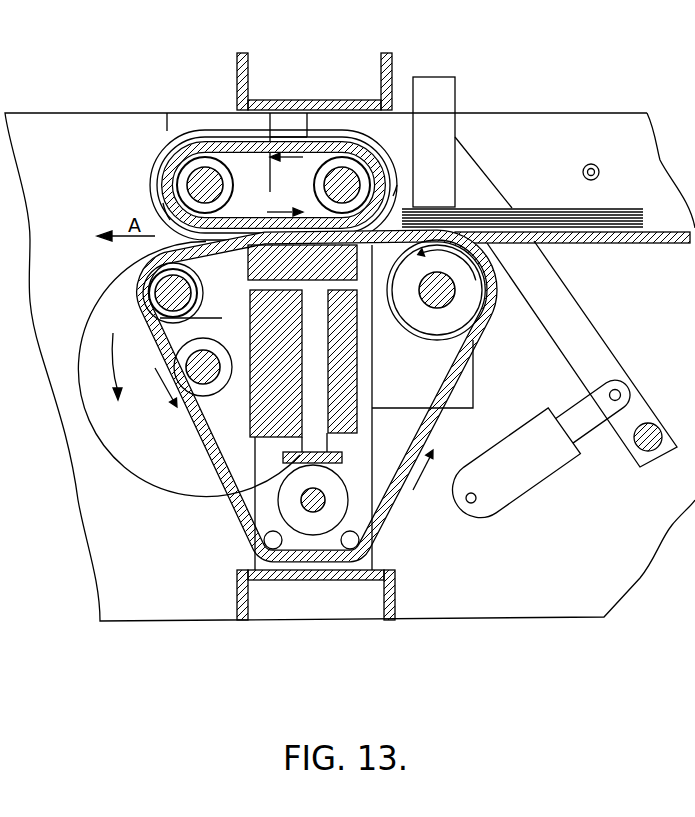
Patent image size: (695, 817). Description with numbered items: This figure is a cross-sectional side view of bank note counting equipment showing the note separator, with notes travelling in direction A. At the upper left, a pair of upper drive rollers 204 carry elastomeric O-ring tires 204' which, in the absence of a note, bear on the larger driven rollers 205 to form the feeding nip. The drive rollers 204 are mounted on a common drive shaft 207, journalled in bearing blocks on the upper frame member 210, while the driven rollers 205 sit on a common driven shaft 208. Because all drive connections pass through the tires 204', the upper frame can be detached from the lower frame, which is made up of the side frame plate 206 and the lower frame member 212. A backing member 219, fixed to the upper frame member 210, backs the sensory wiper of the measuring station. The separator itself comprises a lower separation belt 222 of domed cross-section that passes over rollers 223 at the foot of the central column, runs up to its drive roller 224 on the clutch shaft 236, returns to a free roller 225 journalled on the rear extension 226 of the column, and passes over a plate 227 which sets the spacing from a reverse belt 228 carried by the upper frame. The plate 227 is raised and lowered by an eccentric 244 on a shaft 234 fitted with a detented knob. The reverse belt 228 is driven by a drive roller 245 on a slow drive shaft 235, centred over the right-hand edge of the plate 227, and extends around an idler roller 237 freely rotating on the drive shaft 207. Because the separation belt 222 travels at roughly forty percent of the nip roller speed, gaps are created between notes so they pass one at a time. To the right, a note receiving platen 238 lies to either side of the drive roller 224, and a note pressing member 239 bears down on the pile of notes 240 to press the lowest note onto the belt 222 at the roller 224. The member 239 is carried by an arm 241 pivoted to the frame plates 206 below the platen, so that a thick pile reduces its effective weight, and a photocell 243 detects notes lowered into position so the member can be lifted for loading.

The drive rollers 204 is at (228, 185).
The elastomeric O-ring tires 204' is at (186, 174).
The driven rollers 205 is at (133, 470).
The frame plate 206 is at (543, 598).
The drive shaft 207 is at (165, 203).
The driven shaft 208 is at (190, 418).
The upper frame member 210 is at (248, 70).
The lower frame member 212 is at (397, 598).
The backing member 219 is at (311, 132).
The lower separation belt 222 is at (213, 456).
The rollers 223 is at (314, 560).
The drive roller 224 is at (466, 312).
The free roller 225 is at (147, 298).
The rear extension 226 is at (147, 323).
The plate 227 is at (197, 318).
The reverse belt 228 is at (245, 132).
The shaft 234 is at (595, 166).
The slow drive shaft 235 is at (393, 196).
The clutch shaft 236 is at (455, 292).
The idler roller 237 is at (167, 189).
The note receiving platen 238 is at (611, 244).
The note pressing member 239 is at (432, 90).
The pile of notes 240 is at (522, 207).
The arm 241 is at (598, 338).
The photocell 243 is at (552, 485).
The eccentric 244 is at (365, 522).
The drive roller 245 is at (367, 173).